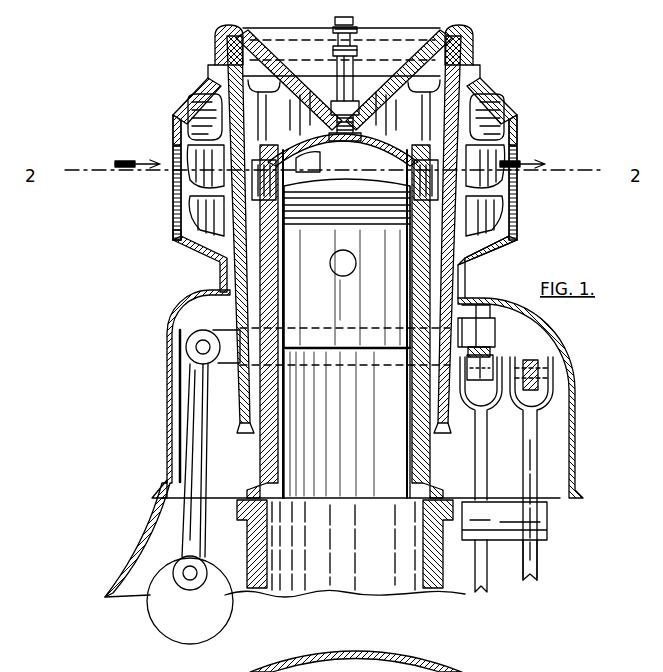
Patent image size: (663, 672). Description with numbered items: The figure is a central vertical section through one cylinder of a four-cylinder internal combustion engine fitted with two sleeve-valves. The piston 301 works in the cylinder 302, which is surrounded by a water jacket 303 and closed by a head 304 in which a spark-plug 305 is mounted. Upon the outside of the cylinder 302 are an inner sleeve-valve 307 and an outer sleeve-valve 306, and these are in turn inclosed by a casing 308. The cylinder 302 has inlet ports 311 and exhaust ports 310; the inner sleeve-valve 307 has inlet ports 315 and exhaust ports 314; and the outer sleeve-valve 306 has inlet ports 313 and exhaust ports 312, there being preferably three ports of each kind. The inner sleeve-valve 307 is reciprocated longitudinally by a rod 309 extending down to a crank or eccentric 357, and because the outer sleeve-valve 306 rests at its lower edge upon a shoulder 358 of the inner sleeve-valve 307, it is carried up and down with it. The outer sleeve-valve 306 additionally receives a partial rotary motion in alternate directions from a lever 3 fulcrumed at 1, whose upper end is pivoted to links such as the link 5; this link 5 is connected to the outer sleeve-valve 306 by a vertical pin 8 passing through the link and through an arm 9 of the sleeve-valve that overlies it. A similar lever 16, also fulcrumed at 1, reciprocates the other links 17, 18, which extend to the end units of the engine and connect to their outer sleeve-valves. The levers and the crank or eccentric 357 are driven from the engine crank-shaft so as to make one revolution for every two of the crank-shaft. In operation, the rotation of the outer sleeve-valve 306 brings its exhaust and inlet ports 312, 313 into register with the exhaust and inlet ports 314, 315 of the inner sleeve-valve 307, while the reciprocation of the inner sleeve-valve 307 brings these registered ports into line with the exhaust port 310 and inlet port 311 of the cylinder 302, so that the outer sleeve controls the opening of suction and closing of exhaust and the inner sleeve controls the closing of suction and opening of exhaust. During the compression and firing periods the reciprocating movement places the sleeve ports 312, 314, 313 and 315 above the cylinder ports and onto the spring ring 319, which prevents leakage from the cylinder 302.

The fulcrum 1 is at (510, 518).
The lever 3 is at (484, 592).
The link 5 is at (480, 395).
The vertical pin 8 is at (491, 350).
The arm of the sleeve-valve 9 is at (495, 322).
The lever 16 is at (538, 570).
The link 17 is at (538, 372).
The link 18 is at (540, 394).
The piston 301 is at (345, 263).
The cylinder 302 is at (345, 424).
The water jacket 303 is at (150, 413).
The head 304 is at (338, 100).
The spark-plug 305 is at (359, 60).
The outer sleeve-valve 306 is at (222, 306).
The inner sleeve-valve 307 is at (212, 268).
The casing 308 is at (174, 230).
The rod 309 is at (196, 465).
The exhaust ports 310 is at (215, 181).
The inlet ports 311 is at (325, 158).
The exhaust ports 312 is at (495, 115).
The inlet ports 313 is at (187, 113).
The exhaust ports 314 is at (498, 101).
The inlet ports 315 is at (203, 102).
The spring ring 319 is at (193, 137).
The crank or eccentric 357 is at (167, 605).
The shoulder 358 is at (196, 339).